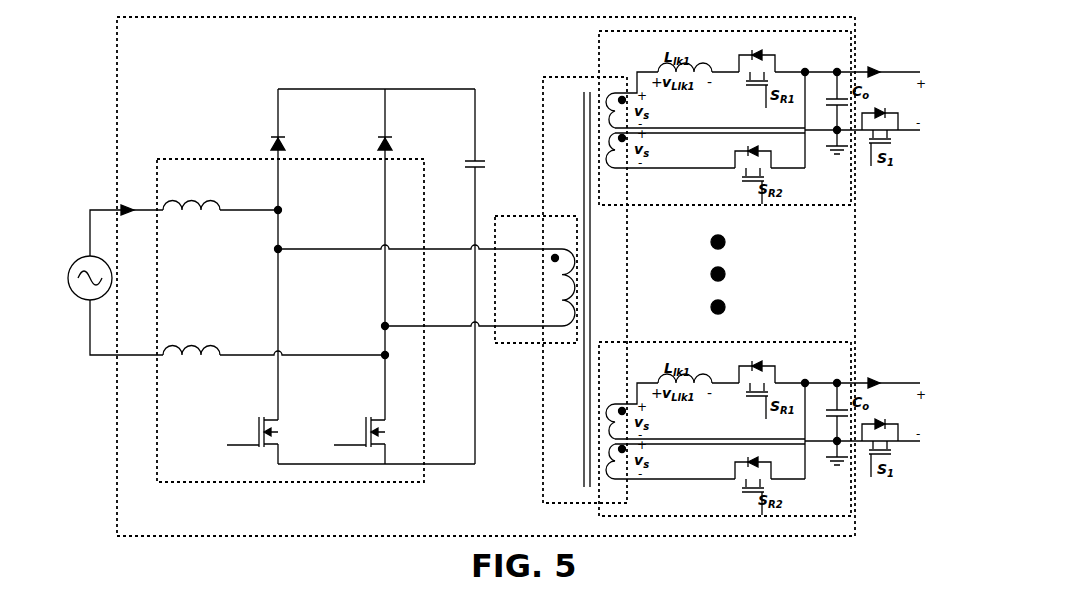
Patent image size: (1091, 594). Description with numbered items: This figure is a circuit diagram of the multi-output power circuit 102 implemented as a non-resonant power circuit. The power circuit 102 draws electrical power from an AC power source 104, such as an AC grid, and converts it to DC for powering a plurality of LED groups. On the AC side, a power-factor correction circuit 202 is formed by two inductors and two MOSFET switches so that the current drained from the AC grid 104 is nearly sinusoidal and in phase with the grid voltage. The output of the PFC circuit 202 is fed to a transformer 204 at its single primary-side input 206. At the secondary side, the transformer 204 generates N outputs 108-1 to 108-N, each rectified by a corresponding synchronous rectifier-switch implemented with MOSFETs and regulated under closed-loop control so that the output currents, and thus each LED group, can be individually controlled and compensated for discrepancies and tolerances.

The multi-output power circuit 102 is at (117, 56).
The AC power source 104 is at (80, 259).
The power-factor correction circuit 202 is at (228, 160).
The transformer 204 is at (561, 280).
The input 206 is at (527, 346).
The DC output 108-1 is at (825, 207).
The DC output 108-N is at (825, 520).